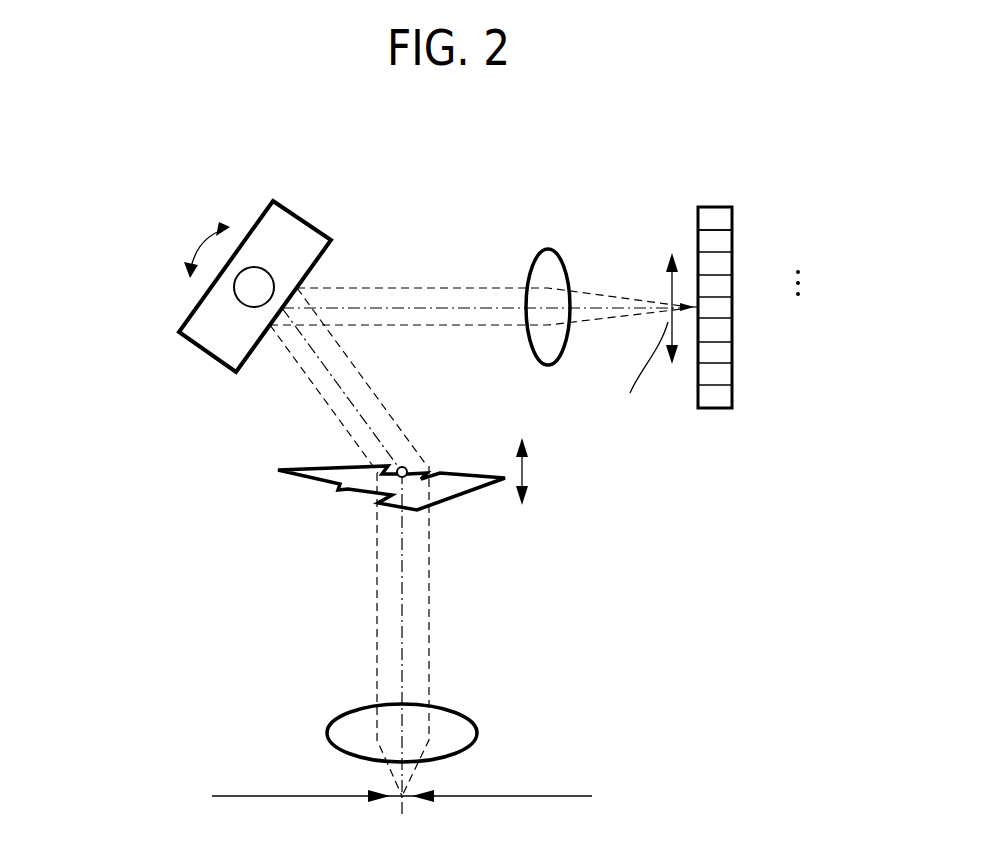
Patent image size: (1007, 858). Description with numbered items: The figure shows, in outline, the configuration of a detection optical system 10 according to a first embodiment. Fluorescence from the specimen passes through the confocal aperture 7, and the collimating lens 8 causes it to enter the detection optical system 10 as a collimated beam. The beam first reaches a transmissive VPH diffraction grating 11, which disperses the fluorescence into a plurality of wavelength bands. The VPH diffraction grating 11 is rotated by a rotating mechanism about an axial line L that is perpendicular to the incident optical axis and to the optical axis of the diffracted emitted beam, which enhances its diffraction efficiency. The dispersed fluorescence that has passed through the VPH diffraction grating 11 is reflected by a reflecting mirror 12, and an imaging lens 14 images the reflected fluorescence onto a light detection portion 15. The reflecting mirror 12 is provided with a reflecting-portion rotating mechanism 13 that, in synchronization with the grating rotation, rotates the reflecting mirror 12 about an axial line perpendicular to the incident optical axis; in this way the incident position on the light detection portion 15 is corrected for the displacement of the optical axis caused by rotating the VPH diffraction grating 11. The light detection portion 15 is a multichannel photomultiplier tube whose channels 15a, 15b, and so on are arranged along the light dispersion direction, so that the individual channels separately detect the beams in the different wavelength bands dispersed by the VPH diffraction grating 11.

The confocal aperture 7 is at (558, 796).
The collimating lens 8 is at (380, 733).
The detection optical system 10 is at (584, 591).
The VPH diffraction grating 11 is at (310, 478).
The reflecting mirror 12 is at (198, 302).
The reflecting-portion rotating mechanism 13 is at (254, 267).
The imaging lens 14 is at (548, 248).
The light detection portion 15 is at (760, 267).
The channel 15a is at (722, 218).
The channel 15b is at (722, 243).
The axial line L is at (402, 466).